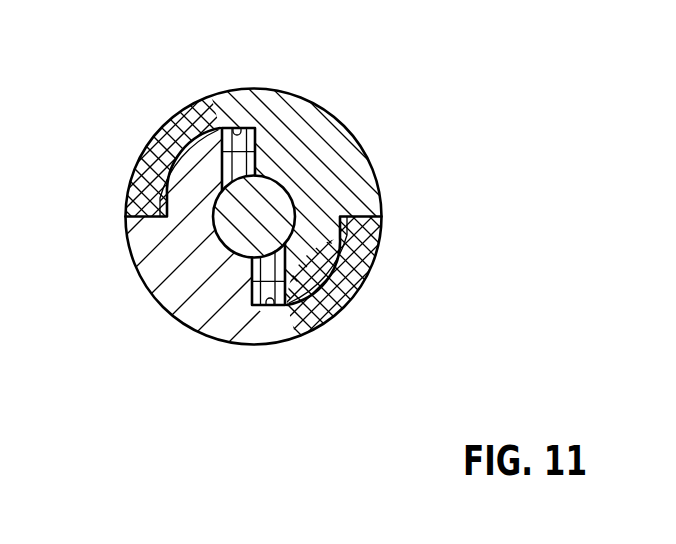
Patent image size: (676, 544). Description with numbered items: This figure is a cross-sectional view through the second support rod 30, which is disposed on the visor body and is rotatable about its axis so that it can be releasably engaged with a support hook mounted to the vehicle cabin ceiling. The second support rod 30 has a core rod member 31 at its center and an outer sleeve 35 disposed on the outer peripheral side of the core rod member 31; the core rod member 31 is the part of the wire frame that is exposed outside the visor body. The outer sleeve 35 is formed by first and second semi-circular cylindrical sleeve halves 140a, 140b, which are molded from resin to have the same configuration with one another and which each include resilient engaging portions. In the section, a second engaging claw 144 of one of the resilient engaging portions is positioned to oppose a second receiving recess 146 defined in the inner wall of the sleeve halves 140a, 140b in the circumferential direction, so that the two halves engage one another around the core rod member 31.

The second support rod 30 is at (438, 95).
The outer sleeve 35 is at (352, 129).
The core rod member 31 is at (280, 198).
The first semi-circular cylindrical sleeve half 140a is at (176, 300).
The second semi-circular cylindrical sleeve half 140b is at (198, 108).
The second engaging claw 144 is at (191, 157).
The second receiving recess 146 is at (238, 127).